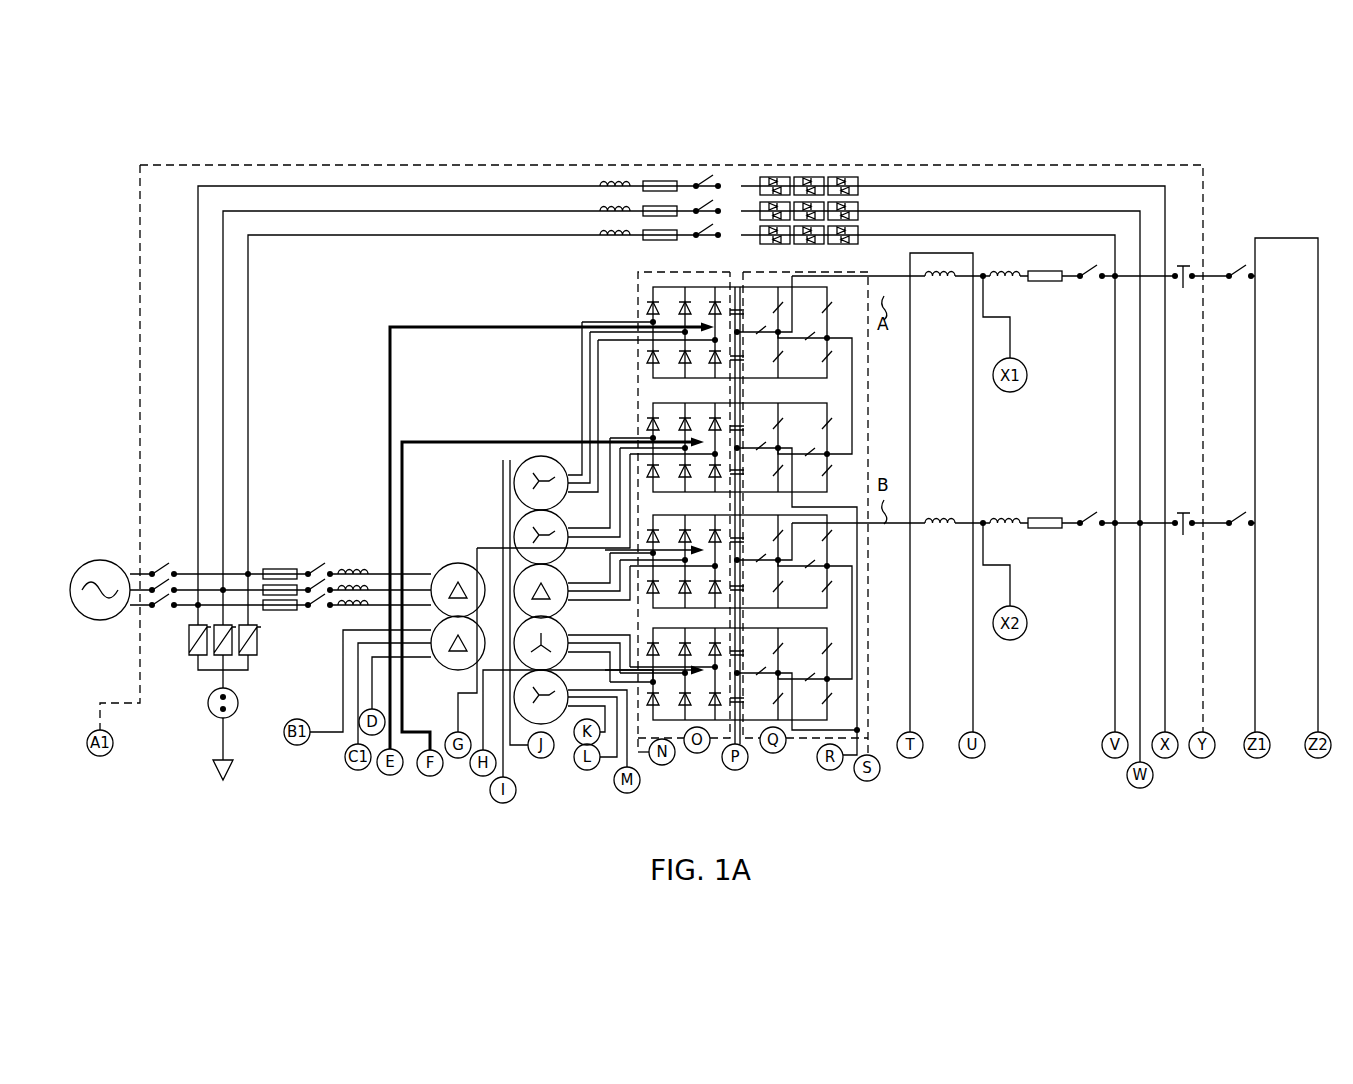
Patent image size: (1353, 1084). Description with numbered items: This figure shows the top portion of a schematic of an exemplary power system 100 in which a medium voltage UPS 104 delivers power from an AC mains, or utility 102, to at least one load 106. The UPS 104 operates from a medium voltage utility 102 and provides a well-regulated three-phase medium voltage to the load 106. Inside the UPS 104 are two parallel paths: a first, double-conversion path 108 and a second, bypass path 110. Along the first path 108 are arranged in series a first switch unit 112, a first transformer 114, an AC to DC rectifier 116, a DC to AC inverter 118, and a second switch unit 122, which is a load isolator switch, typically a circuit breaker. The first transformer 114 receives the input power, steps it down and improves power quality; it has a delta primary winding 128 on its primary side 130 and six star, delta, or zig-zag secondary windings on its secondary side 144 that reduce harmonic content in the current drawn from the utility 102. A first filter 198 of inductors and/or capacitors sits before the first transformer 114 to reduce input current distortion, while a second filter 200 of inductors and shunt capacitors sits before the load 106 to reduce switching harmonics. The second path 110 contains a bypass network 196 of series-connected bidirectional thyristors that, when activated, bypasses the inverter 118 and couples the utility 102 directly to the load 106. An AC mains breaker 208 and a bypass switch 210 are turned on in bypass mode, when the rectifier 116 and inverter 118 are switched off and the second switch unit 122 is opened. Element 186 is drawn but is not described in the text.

The power system 100 is at (162, 150).
The utility 102 is at (100, 560).
The medium voltage UPS 104 is at (138, 259).
The load 106 is at (1288, 236).
The first path 108 is at (336, 420).
The second path 110 is at (268, 252).
The first switch unit 112 is at (312, 622).
The first transformer 114 is at (470, 425).
The rectifier 116 is at (684, 268).
The inverter 118 is at (805, 268).
The second switch unit 122 is at (1090, 290).
The primary winding 128 is at (446, 562).
The primary side 130 is at (418, 466).
The secondary side 144 is at (522, 430).
The output filter 186 is at (972, 405).
The bypass network 196 is at (718, 152).
The first filter 198 is at (355, 556).
The second filter 200 is at (1010, 264).
The AC mains breaker 208 is at (154, 563).
The bypass switch 210 is at (694, 178).